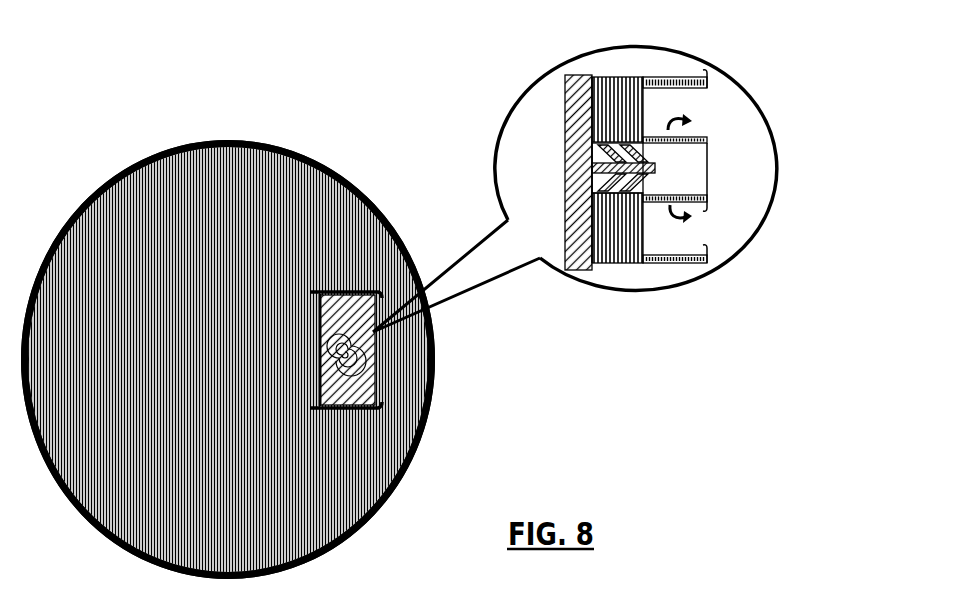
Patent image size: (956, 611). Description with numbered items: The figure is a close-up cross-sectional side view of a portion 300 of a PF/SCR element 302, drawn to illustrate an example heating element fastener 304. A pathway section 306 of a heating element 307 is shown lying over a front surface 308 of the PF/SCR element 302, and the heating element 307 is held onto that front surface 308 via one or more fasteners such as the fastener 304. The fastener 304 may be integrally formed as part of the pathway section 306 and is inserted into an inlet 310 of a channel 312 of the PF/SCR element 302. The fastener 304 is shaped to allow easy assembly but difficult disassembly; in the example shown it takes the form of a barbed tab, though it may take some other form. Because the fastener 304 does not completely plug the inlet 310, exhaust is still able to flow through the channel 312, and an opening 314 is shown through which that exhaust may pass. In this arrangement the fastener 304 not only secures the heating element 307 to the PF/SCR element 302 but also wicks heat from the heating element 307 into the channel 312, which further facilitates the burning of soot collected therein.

The portion 300 is at (740, 80).
The PF/SCR element 302 is at (213, 140).
The heating element fastener 304 is at (620, 77).
The pathway section 306 is at (373, 303).
The heating element 307 is at (565, 86).
The front surface 308 is at (408, 465).
The inlet 310 is at (565, 140).
The channel 312 is at (677, 165).
The opening 314 is at (367, 355).